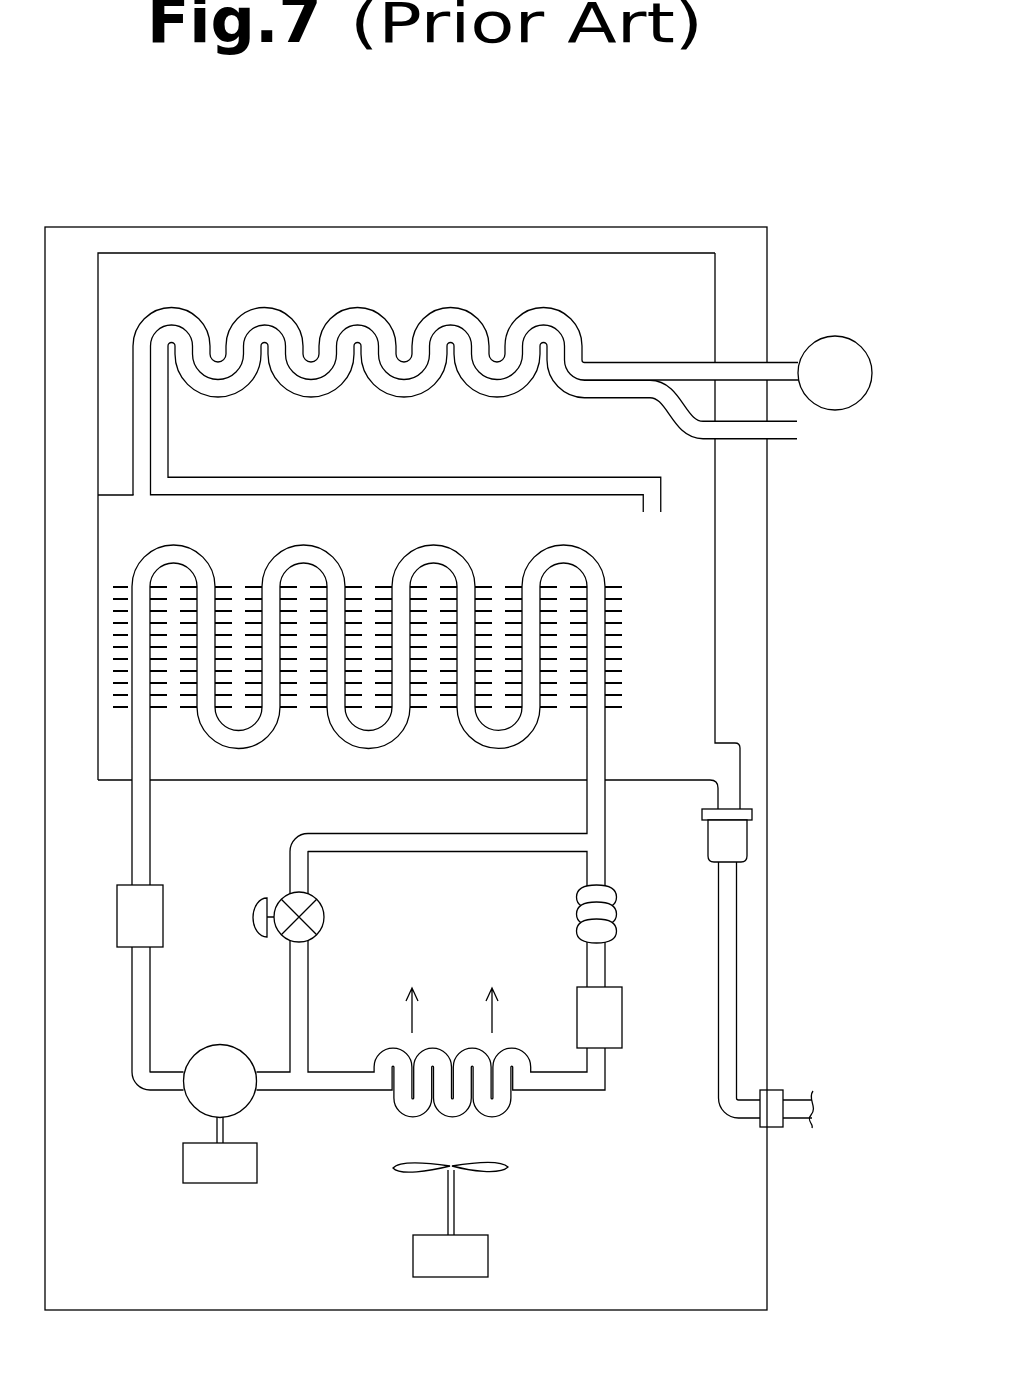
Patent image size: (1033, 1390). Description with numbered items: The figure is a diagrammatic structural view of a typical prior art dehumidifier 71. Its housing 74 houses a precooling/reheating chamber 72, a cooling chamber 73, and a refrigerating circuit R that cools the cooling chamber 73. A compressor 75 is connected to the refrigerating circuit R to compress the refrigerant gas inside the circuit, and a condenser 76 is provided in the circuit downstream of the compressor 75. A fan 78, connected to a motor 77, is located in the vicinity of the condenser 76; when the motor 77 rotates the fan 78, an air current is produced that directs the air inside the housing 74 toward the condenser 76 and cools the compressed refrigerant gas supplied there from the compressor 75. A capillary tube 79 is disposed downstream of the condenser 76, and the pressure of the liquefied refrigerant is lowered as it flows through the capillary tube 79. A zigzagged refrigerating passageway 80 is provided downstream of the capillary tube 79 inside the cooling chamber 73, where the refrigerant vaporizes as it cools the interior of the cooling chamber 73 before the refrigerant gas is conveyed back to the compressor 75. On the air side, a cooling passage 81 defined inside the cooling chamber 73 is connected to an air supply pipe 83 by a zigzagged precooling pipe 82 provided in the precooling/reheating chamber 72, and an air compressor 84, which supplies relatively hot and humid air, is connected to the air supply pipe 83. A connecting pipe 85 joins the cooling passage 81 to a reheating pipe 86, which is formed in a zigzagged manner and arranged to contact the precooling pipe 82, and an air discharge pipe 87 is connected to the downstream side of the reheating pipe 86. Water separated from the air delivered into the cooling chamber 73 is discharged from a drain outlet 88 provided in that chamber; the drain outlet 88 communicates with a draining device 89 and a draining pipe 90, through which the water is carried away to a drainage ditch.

The dehumidifier 71 is at (512, 183).
The precooling/reheating chamber 72 is at (323, 257).
The cooling chamber 73 is at (706, 549).
The housing 74 is at (252, 227).
The compressor 75 is at (218, 1045).
The condenser 76 is at (505, 1113).
The motor 77 is at (488, 1252).
The fan 78 is at (393, 1167).
The capillary tube 79 is at (577, 910).
The refrigerating passageway 80 is at (450, 549).
The cooling passage 81 is at (113, 543).
The precooling pipe 82 is at (262, 306).
The air supply pipe 83 is at (780, 362).
The air compressor 84 is at (843, 337).
The connecting pipe 85 is at (435, 478).
The reheating pipe 86 is at (313, 398).
The air discharge pipe 87 is at (780, 440).
The drain outlet 88 is at (718, 800).
The draining device 89 is at (717, 838).
The draining pipe 90 is at (795, 1097).
The refrigerating circuit R is at (121, 994).